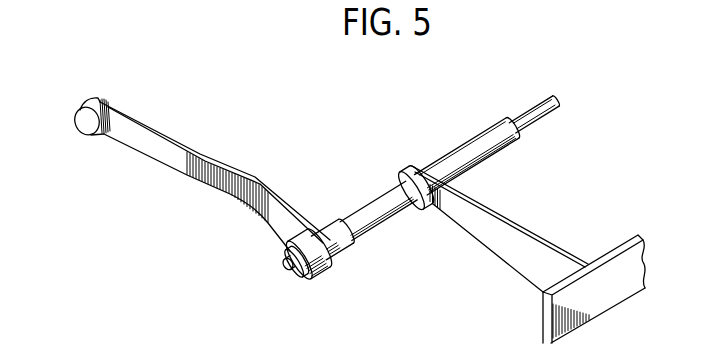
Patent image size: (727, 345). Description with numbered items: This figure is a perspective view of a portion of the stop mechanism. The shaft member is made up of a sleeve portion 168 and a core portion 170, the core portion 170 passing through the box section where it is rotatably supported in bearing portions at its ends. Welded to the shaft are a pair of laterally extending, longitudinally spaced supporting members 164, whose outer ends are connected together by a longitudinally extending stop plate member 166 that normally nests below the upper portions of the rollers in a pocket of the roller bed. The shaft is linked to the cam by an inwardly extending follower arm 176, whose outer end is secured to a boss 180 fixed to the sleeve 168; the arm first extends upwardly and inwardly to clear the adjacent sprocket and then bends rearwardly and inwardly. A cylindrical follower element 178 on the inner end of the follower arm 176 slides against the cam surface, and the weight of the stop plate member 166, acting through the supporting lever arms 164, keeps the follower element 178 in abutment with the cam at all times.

The supporting member 164 is at (517, 250).
The stop plate member 166 is at (631, 288).
The sleeve portion 168 is at (489, 156).
The core portion 170 is at (551, 104).
The follower arm 176 is at (217, 187).
The follower element 178 is at (83, 121).
The boss 180 is at (356, 243).